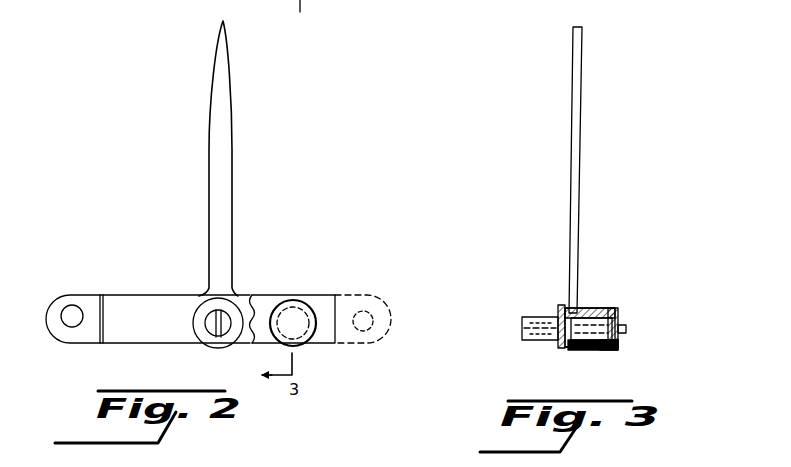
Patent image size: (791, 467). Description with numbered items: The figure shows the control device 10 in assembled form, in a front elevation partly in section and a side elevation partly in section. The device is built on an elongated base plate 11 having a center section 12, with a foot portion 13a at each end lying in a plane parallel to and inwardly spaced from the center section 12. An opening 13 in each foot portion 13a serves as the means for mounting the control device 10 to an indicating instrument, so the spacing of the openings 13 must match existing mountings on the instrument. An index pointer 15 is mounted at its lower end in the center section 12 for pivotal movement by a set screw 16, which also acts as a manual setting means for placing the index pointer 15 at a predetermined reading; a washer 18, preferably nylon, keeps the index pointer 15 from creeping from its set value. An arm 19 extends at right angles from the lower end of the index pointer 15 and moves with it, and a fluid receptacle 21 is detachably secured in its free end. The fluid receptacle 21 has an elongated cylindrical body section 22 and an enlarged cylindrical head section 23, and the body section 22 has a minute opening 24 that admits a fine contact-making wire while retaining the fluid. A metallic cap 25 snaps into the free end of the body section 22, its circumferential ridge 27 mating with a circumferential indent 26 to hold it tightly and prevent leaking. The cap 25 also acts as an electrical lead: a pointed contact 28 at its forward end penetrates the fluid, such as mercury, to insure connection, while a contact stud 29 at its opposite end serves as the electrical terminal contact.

In FIG. 2, the control device 10 is at (220, 322).
In FIG. 2, the base plate 11 is at (156, 340).
In FIG. 2, the center section 12 is at (112, 341).
In FIG. 2, the opening 13 is at (66, 326).
In FIG. 2, the foot portion 13a is at (78, 346).
In FIG. 2, the index pointer 15 is at (230, 137).
In FIG. 3, the index pointer 15 is at (581, 140).
In FIG. 2, the set screw 16 is at (229, 318).
In FIG. 3, the set screw 16 is at (550, 341).
In FIG. 2, the washer 18 is at (204, 304).
In FIG. 3, the washer 18 is at (560, 307).
In FIG. 2, the arm 19 is at (268, 303).
In FIG. 3, the arm 19 is at (572, 348).
In FIG. 2, the fluid receptacle 21 is at (300, 337).
In FIG. 3, the body section 22 is at (594, 350).
In FIG. 2, the head section 23 is at (300, 313).
In FIG. 3, the head section 23 is at (572, 310).
In FIG. 3, the opening 24 is at (584, 311).
In FIG. 3, the metallic cap 25 is at (628, 328).
In FIG. 3, the circumferential indent 26 is at (613, 312).
In FIG. 3, the circumferential ridge 27 is at (617, 345).
In FIG. 3, the pointed contact 28 is at (606, 350).
In FIG. 3, the contact stud 29 is at (623, 325).